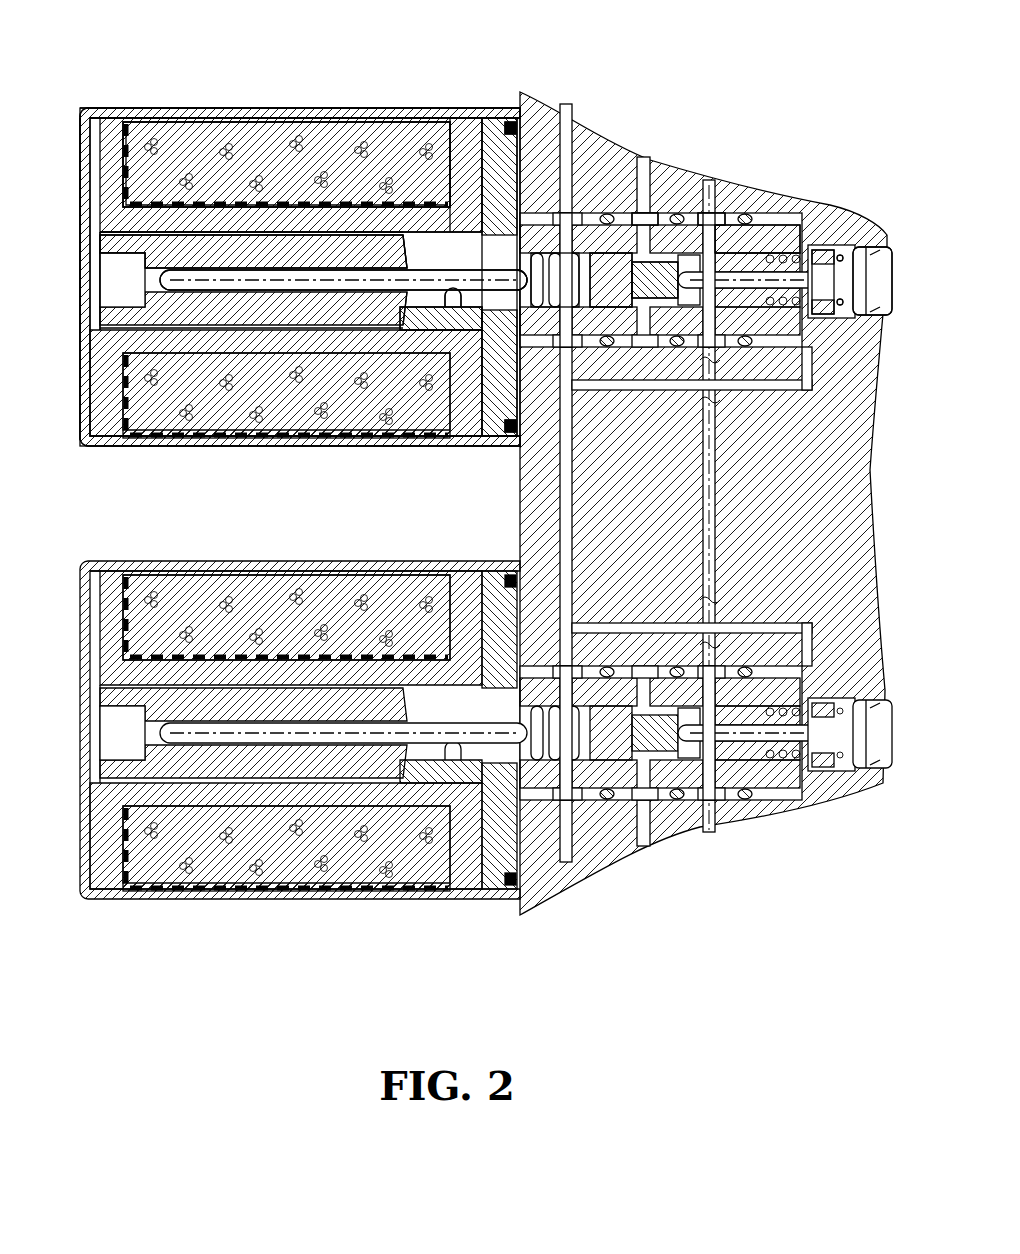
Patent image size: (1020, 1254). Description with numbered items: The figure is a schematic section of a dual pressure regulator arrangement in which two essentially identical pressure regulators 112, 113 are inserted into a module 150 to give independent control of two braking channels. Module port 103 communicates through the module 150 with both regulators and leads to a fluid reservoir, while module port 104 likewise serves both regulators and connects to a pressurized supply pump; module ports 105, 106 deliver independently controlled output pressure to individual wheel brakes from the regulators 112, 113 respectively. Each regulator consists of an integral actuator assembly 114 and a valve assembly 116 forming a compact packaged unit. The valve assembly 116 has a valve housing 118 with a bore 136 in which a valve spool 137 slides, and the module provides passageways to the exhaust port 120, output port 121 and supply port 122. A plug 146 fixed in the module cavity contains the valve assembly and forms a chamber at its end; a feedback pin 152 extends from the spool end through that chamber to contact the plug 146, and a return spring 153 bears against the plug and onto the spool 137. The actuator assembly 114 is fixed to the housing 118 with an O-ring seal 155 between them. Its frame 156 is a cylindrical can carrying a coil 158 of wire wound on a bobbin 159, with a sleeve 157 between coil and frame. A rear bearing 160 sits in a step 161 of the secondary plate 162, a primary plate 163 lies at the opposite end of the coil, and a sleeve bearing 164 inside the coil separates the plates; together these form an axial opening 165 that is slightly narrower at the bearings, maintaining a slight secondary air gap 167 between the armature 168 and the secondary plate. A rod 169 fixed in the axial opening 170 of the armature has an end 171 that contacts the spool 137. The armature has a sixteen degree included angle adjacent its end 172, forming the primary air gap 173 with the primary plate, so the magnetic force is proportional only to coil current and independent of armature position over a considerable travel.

The module port 103 is at (566, 130).
The module port 104 is at (712, 160).
The module port 105 is at (620, 160).
The module port 106 is at (644, 845).
The pressure regulator 112 is at (360, 105).
The pressure regulator 113 is at (290, 900).
The actuator assembly 114 is at (178, 450).
The valve assembly 116 is at (762, 213).
The valve housing 118 is at (786, 222).
The exhaust port 120 is at (568, 240).
The output port 121 is at (645, 240).
The supply port 122 is at (705, 260).
The bore 136 is at (610, 240).
The valve spool 137 is at (680, 255).
The plug 146 is at (876, 246).
The module 150 is at (548, 532).
The feedback pin 152 is at (848, 278).
The return spring 153 is at (830, 270).
The O-ring seal 155 is at (512, 122).
The frame 156 is at (215, 112).
The sleeve 157 is at (245, 125).
The coil 158 is at (300, 160).
The bobbin 159 is at (320, 190).
The rear bearing 160 is at (105, 228).
The step 161 is at (88, 178).
The secondary plate 162 is at (95, 150).
The primary plate 163 is at (470, 130).
The sleeve bearing 164 is at (255, 215).
The axial opening 165 is at (470, 350).
The secondary air gap 167 is at (98, 338).
The armature 168 is at (295, 318).
The rod 169 is at (452, 320).
The axial opening 170 is at (150, 285).
The end 171 is at (512, 294).
The end 172 is at (405, 300).
The primary air gap 173 is at (405, 230).